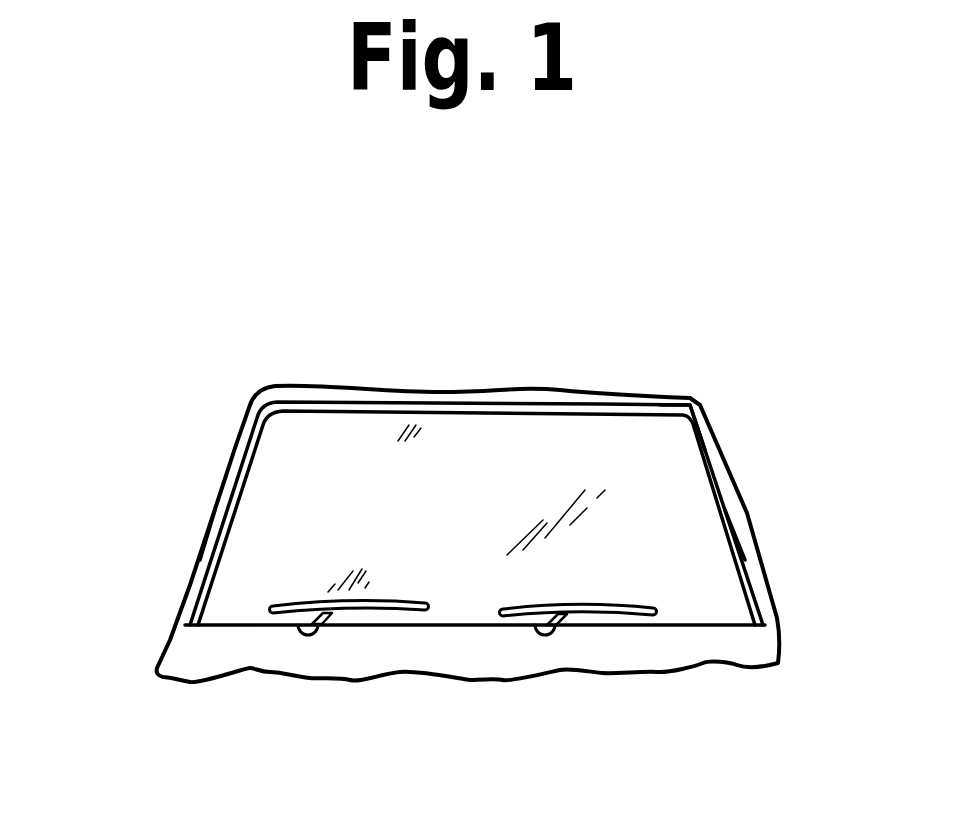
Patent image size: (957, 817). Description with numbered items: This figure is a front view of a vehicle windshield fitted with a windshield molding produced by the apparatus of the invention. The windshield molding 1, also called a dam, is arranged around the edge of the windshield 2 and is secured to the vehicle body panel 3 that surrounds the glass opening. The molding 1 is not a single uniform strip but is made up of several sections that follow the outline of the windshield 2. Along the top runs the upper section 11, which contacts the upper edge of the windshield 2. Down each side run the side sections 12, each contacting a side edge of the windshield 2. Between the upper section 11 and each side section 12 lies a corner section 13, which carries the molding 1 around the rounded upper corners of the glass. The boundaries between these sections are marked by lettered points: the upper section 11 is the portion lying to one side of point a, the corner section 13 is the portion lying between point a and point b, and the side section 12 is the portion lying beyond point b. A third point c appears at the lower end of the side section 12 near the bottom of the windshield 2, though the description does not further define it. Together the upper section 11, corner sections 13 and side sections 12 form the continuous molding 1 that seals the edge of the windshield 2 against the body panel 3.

The windshield molding 1 is at (283, 397).
The windshield 2 is at (477, 552).
The vehicle body panel 3 is at (720, 410).
The upper section 11 is at (562, 407).
The side sections 12 is at (212, 541).
The corner sections 13 is at (695, 400).
The point a is at (658, 360).
The point b is at (751, 433).
The lower molding section c is at (806, 623).